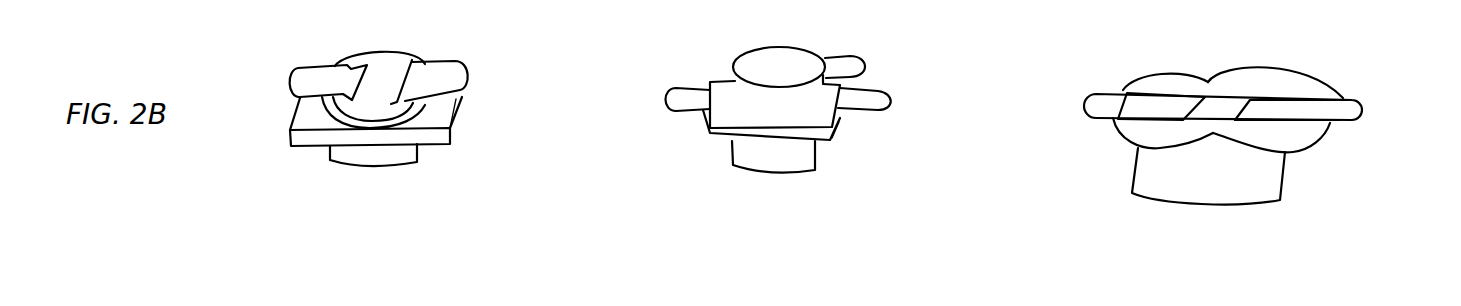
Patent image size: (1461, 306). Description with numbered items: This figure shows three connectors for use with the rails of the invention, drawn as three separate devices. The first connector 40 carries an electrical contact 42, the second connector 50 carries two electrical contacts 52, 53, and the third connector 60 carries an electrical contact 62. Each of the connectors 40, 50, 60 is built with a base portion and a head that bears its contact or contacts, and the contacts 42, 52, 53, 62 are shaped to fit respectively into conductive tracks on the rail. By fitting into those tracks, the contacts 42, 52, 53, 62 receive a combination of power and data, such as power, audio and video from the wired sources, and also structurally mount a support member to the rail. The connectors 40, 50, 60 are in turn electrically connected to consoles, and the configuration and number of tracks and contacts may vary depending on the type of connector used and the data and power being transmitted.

The connector 40 is at (401, 106).
The electrical contact 42 is at (442, 62).
The connector 50 is at (801, 117).
The electrical contact 52 is at (878, 90).
The electrical contact 53 is at (846, 55).
The connector 60 is at (1247, 156).
The electrical contact 62 is at (1343, 100).